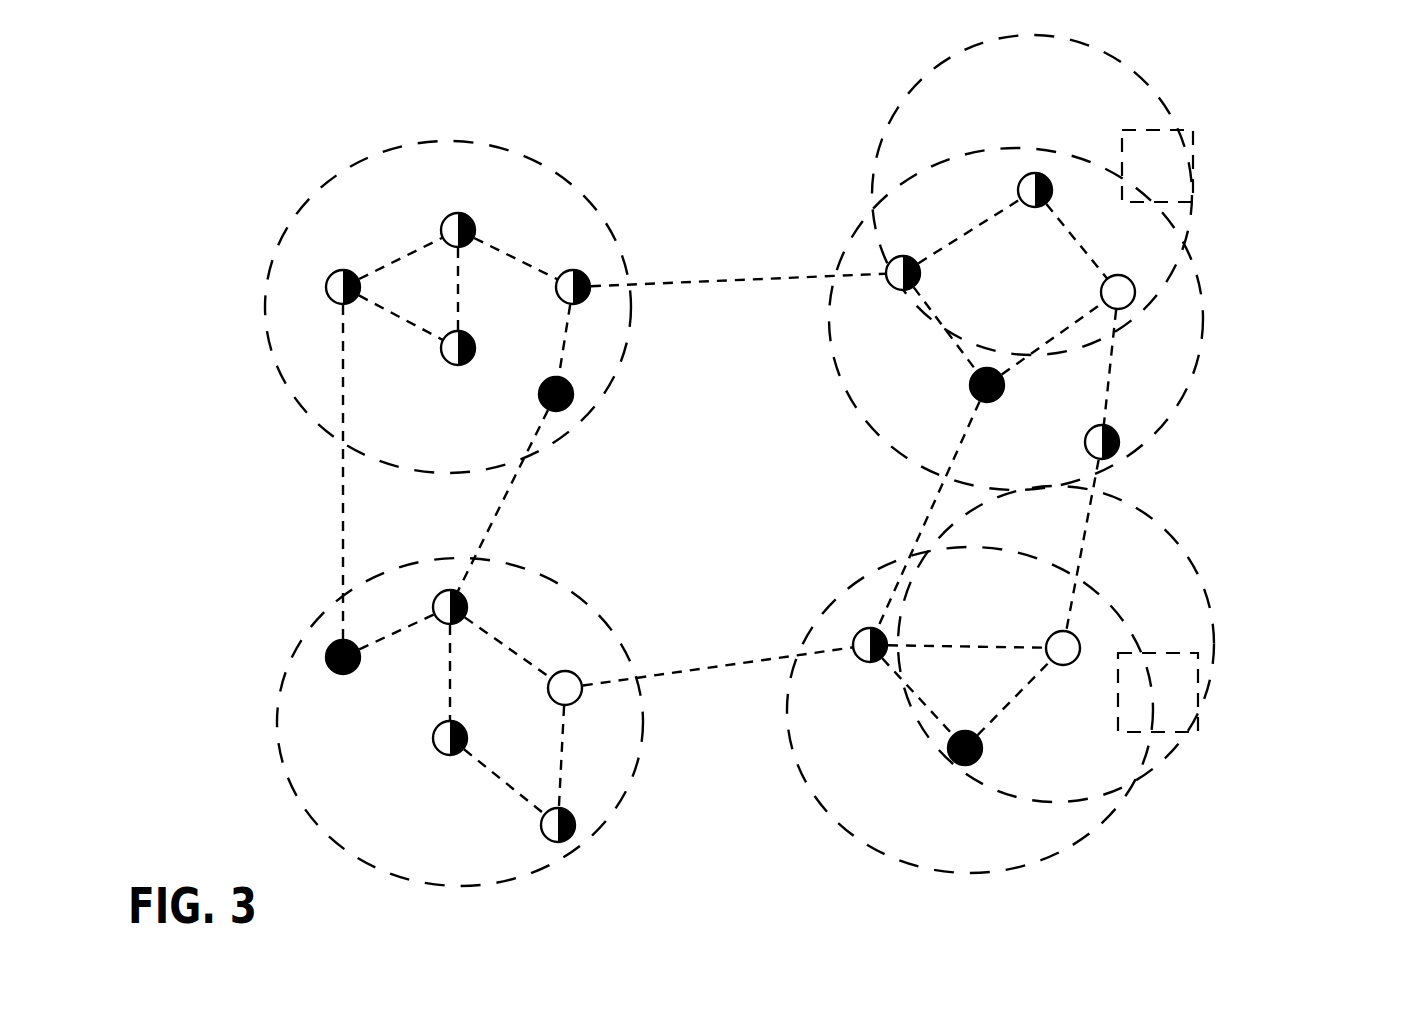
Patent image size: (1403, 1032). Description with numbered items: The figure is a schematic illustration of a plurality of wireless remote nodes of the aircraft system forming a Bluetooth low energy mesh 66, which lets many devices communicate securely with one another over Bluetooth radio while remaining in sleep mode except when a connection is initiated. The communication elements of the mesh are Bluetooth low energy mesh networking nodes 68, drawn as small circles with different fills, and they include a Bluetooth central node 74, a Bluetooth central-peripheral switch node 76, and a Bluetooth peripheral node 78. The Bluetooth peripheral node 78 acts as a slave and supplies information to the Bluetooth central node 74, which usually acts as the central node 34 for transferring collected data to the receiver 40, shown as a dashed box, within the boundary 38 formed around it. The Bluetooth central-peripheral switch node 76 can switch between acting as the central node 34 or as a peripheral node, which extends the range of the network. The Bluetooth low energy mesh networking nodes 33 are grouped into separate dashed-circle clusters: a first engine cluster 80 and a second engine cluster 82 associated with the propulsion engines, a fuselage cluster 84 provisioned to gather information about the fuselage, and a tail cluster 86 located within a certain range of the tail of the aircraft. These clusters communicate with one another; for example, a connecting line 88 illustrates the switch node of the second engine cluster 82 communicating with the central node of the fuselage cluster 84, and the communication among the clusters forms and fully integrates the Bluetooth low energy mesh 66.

The Bluetooth low energy mesh networking node 33 is at (766, 482).
The central node 34 is at (1047, 177).
The boundary 38 is at (934, 72).
The receiver 40 is at (1193, 172).
The Bluetooth low energy mesh 66 is at (272, 121).
The Bluetooth low energy mesh networking nodes 68 is at (1236, 333).
The Bluetooth central node 74 is at (578, 677).
The Bluetooth central-peripheral switch node 76 is at (463, 215).
The Bluetooth peripheral node 78 is at (571, 403).
The first engine cluster 80 is at (384, 142).
The second engine cluster 82 is at (898, 178).
The fuselage cluster 84 is at (830, 820).
The tail cluster 86 is at (277, 743).
The connecting line 88 is at (1181, 490).